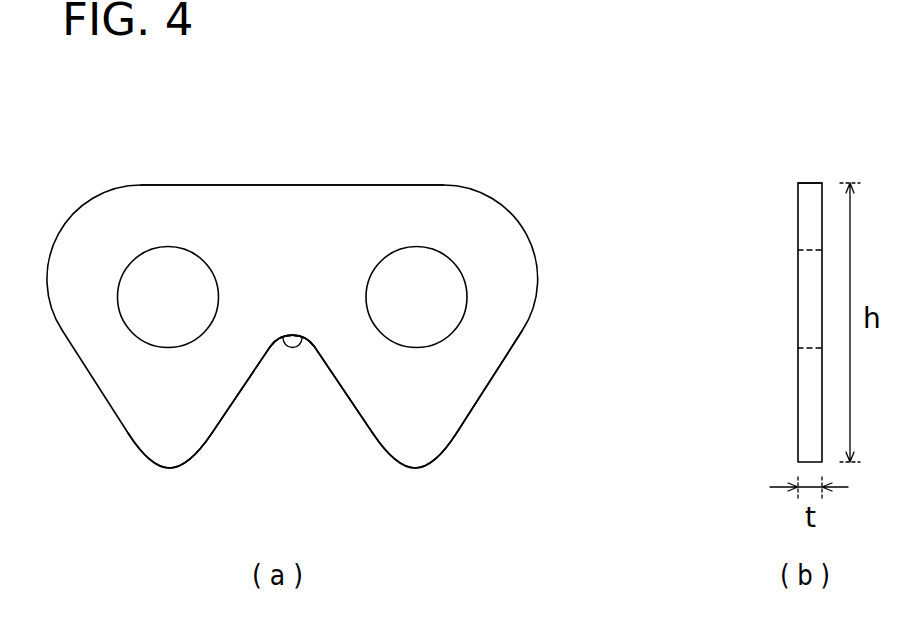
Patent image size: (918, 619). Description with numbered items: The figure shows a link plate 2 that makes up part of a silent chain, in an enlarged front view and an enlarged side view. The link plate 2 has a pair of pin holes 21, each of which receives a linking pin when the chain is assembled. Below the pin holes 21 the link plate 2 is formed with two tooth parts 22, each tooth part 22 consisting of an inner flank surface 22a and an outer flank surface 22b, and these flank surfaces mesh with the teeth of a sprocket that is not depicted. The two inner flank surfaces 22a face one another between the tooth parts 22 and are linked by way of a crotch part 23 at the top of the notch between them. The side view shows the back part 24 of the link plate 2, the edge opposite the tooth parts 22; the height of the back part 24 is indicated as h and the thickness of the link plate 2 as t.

The link plate 2 is at (320, 146).
The pin hole 21 is at (118, 317).
The tooth part 22 is at (167, 458).
The inner flank surface 22a is at (237, 403).
The outer flank surface 22b is at (477, 412).
The crotch part 23 is at (302, 337).
The back part 24 is at (295, 185).